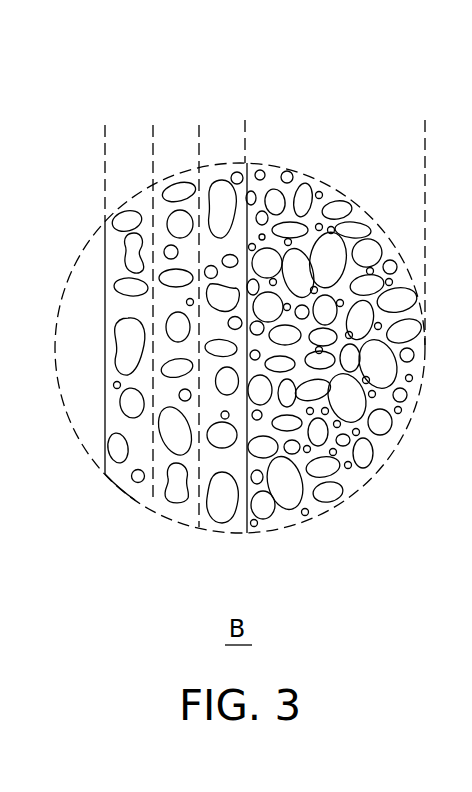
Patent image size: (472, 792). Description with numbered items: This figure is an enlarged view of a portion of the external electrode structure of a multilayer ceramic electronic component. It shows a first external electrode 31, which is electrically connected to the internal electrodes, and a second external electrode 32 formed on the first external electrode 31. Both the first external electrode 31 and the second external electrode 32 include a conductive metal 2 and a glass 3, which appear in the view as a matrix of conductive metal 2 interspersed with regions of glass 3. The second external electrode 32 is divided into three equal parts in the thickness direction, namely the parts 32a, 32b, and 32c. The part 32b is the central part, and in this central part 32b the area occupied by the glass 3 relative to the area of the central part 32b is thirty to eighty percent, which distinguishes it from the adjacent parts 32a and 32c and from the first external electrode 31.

The conductive metal 2 is at (223, 512).
The glass 3 is at (178, 512).
The first external electrode 31 is at (425, 120).
The second external electrode 32 is at (105, 63).
The first part of second external electrode 32a is at (199, 124).
The central part of second external electrode 32b is at (153, 124).
The third part of second external electrode 32c is at (153, 124).